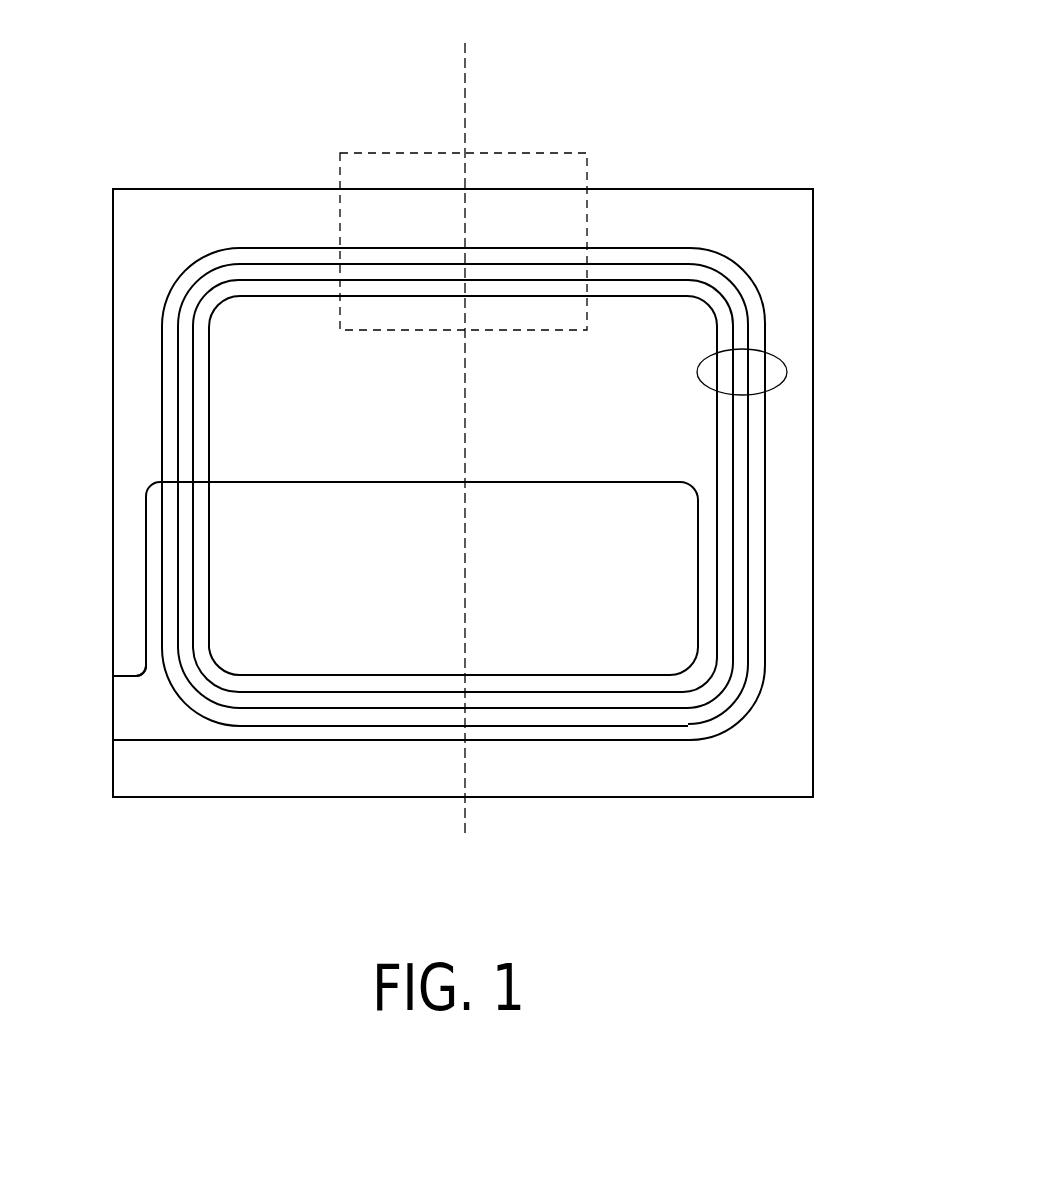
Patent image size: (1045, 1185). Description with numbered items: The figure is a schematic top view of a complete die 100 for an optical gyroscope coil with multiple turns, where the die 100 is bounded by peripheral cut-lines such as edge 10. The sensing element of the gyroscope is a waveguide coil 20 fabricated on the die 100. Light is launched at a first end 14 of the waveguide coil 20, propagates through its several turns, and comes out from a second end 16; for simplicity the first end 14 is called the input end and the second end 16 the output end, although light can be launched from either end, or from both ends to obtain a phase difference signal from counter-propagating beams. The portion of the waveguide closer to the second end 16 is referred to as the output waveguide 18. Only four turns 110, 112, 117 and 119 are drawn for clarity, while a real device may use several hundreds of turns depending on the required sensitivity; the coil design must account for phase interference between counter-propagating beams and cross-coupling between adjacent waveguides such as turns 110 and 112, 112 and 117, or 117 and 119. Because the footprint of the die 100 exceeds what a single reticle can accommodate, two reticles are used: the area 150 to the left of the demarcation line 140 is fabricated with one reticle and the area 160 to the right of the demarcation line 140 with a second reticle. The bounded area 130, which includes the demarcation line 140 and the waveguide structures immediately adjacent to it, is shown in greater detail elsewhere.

The die 100 is at (136, 66).
The edge 10 is at (813, 240).
The first end 14 is at (113, 740).
The second end 16 is at (113, 677).
The output waveguide 18 is at (540, 481).
The waveguide coil 20 is at (787, 365).
The turn 110 is at (617, 295).
The turn 112 is at (633, 280).
The turn 117 is at (652, 264).
The turn 119 is at (667, 248).
The bounded area 130 is at (378, 152).
The demarcation line 140 is at (465, 97).
The area 150 is at (273, 798).
The area 160 is at (629, 798).